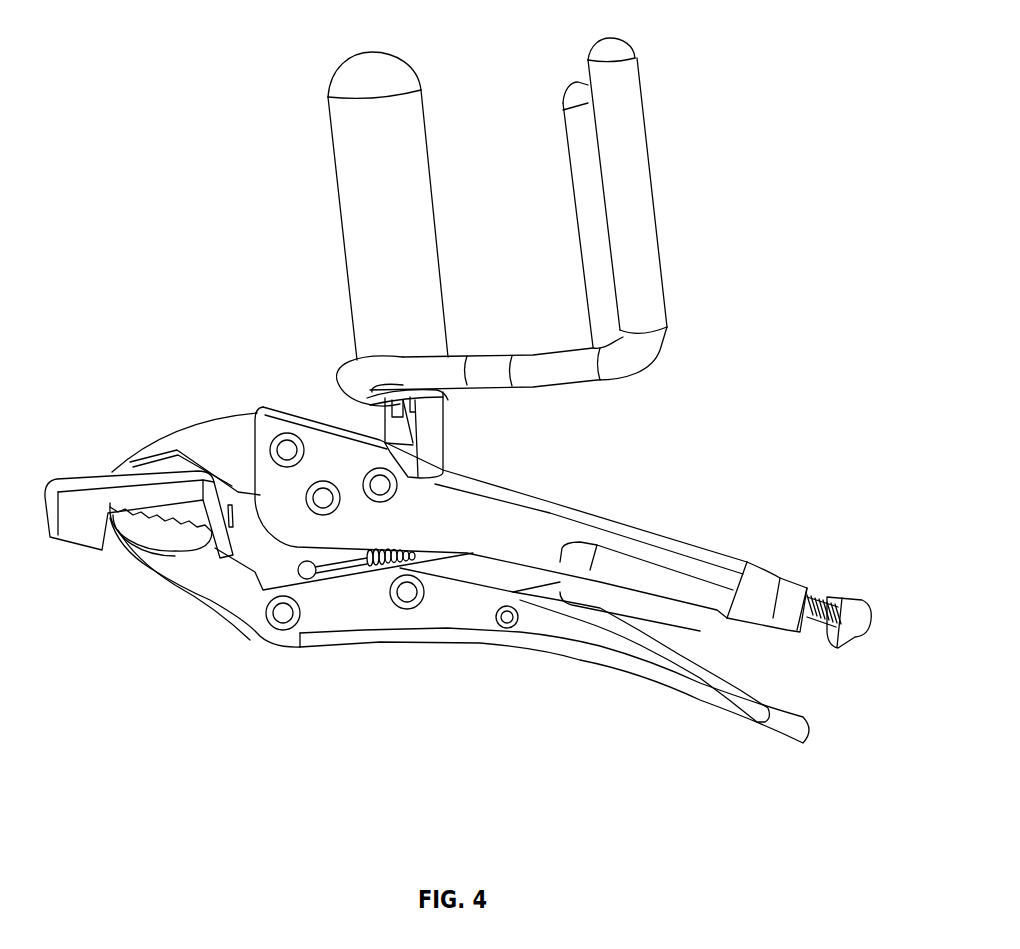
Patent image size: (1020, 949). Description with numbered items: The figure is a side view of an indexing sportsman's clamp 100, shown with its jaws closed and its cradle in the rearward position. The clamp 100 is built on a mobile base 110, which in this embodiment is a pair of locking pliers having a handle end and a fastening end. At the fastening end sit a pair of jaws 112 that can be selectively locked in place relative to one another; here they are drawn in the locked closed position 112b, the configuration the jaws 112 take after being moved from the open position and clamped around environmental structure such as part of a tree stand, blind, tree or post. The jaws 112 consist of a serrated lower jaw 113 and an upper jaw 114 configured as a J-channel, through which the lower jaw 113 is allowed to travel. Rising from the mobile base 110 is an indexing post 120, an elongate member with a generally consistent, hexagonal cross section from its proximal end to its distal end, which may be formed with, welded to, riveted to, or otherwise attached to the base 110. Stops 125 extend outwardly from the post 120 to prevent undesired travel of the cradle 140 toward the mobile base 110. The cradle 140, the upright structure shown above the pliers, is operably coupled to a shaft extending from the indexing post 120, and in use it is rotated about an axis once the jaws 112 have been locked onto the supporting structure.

The indexing sportsman's clamp 100 is at (673, 60).
The mobile base 110 is at (693, 483).
The jaws 112 is at (216, 364).
The locked closed position 112b is at (123, 566).
The serrated lower jaw 113 is at (165, 533).
The upper jaw 114 is at (132, 476).
The indexing post 120 is at (442, 440).
The stops 125 is at (436, 432).
The cradle 140 is at (263, 136).